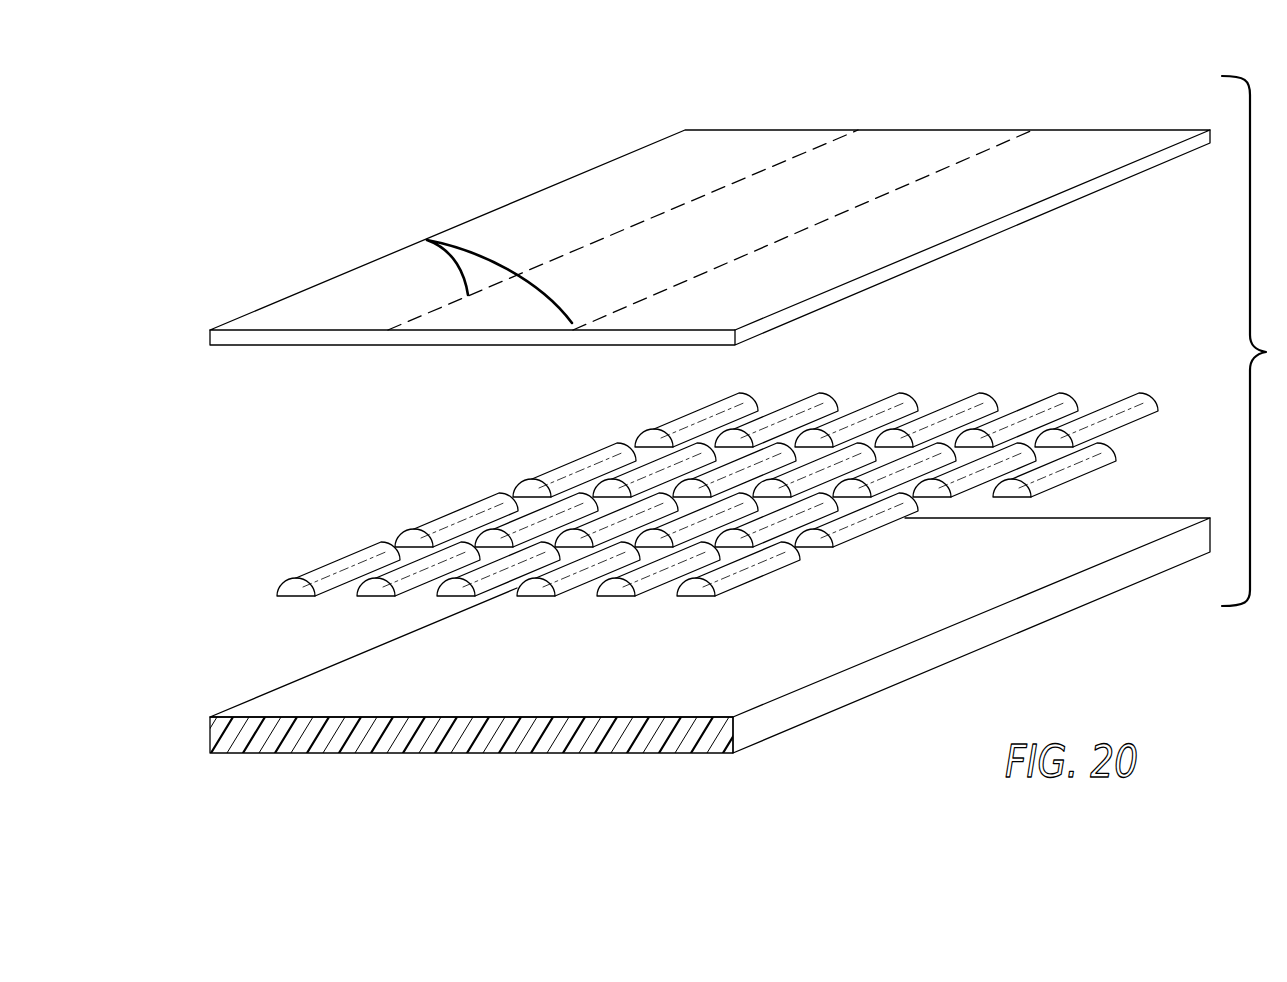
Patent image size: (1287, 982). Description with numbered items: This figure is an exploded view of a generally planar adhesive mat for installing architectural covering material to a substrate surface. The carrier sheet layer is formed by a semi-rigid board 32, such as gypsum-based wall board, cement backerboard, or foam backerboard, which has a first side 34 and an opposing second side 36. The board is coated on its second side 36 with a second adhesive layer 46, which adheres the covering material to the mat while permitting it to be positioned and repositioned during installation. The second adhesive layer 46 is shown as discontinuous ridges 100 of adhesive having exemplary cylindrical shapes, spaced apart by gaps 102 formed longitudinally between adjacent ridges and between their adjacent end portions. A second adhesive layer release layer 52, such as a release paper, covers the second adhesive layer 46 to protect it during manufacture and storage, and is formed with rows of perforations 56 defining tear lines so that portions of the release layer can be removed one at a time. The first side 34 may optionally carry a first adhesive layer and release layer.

The carrier sheet 32 is at (671, 665).
The first side 34 is at (265, 752).
The second side 36 is at (252, 712).
The second adhesive layer 46 is at (689, 495).
The second adhesive layer release layer 52 is at (210, 338).
The rows of perforations 56 is at (427, 240).
The discontinuous ridges 100 is at (322, 558).
The gaps 102 is at (400, 546).